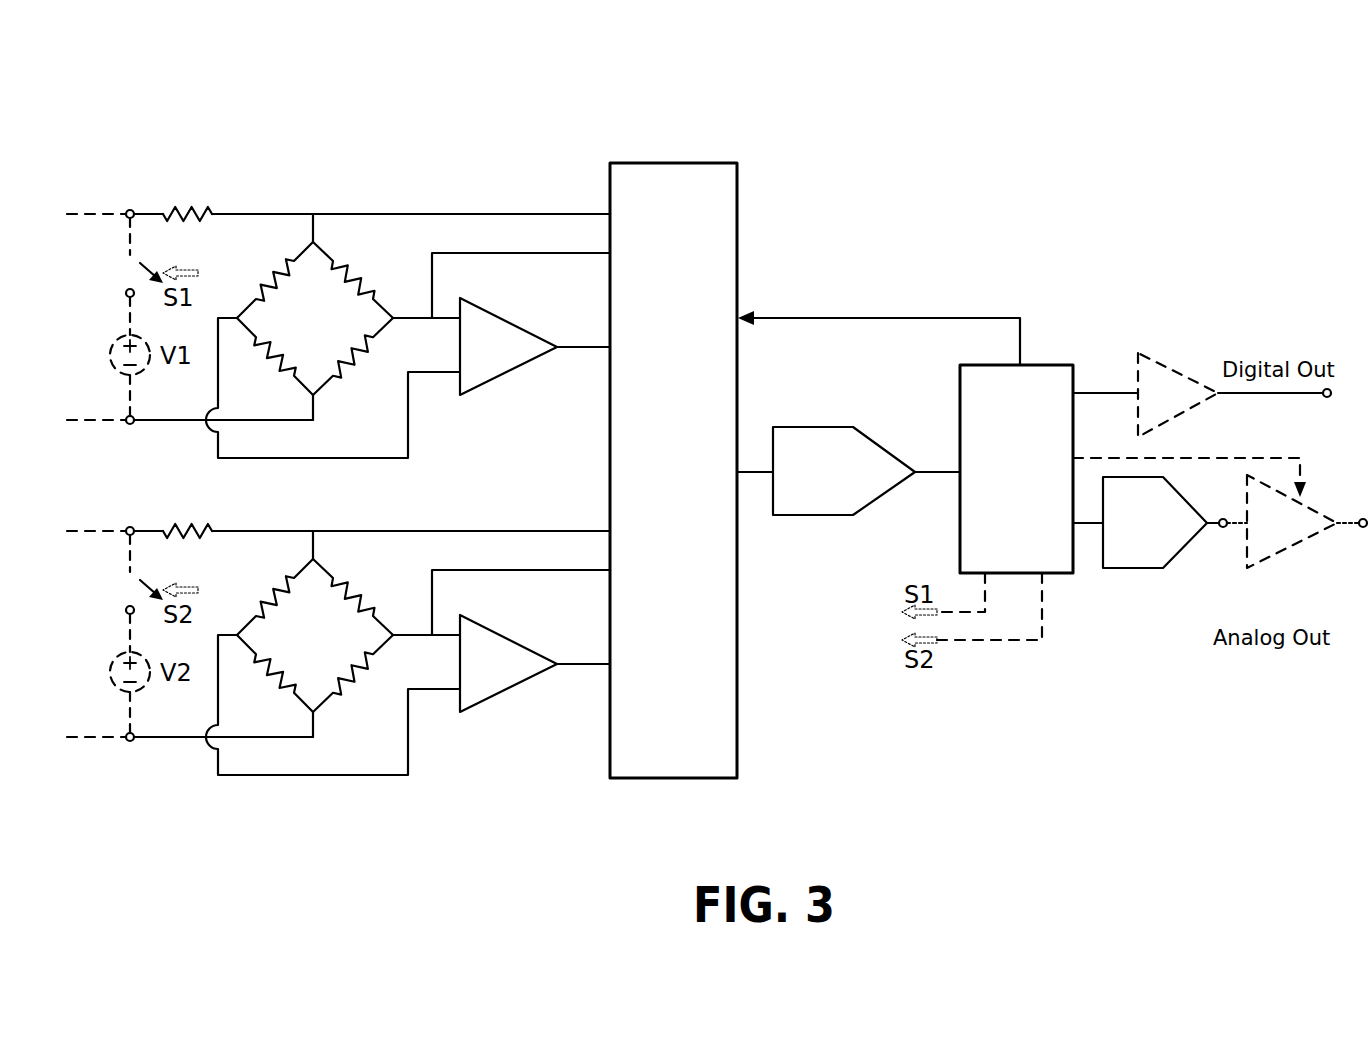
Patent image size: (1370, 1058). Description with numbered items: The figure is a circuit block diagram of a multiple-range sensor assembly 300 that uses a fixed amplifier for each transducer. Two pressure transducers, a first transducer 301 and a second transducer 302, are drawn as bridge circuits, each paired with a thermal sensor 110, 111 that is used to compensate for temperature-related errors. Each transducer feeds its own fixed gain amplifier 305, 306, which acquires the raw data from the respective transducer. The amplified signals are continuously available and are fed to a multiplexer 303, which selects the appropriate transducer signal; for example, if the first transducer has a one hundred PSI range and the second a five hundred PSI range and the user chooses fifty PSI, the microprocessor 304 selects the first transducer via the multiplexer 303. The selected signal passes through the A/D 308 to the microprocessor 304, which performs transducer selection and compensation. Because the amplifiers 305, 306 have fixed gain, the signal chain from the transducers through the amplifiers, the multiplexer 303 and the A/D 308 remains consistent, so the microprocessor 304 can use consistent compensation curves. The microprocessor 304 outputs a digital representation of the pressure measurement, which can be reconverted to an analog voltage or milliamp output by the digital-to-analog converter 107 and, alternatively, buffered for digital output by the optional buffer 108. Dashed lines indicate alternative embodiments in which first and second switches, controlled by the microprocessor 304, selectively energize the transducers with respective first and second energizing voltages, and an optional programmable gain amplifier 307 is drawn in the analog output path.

The multiple-range sensor assembly 300 is at (727, 84).
The thermal sensor 110 is at (182, 213).
The thermal sensor 111 is at (212, 511).
The first transducer 301 is at (289, 331).
The second transducer 302 is at (315, 635).
The multiplexer 303 is at (649, 205).
The microprocessor 304 is at (992, 411).
The fixed gain amplifier 305 is at (473, 359).
The fixed gain amplifier 306 is at (508, 663).
The programmable gain amplifier 307 is at (1290, 543).
The analog-to-digital converter 308 is at (796, 461).
The digital-to-analog converter 107 is at (1118, 511).
The buffer 108 is at (1143, 406).